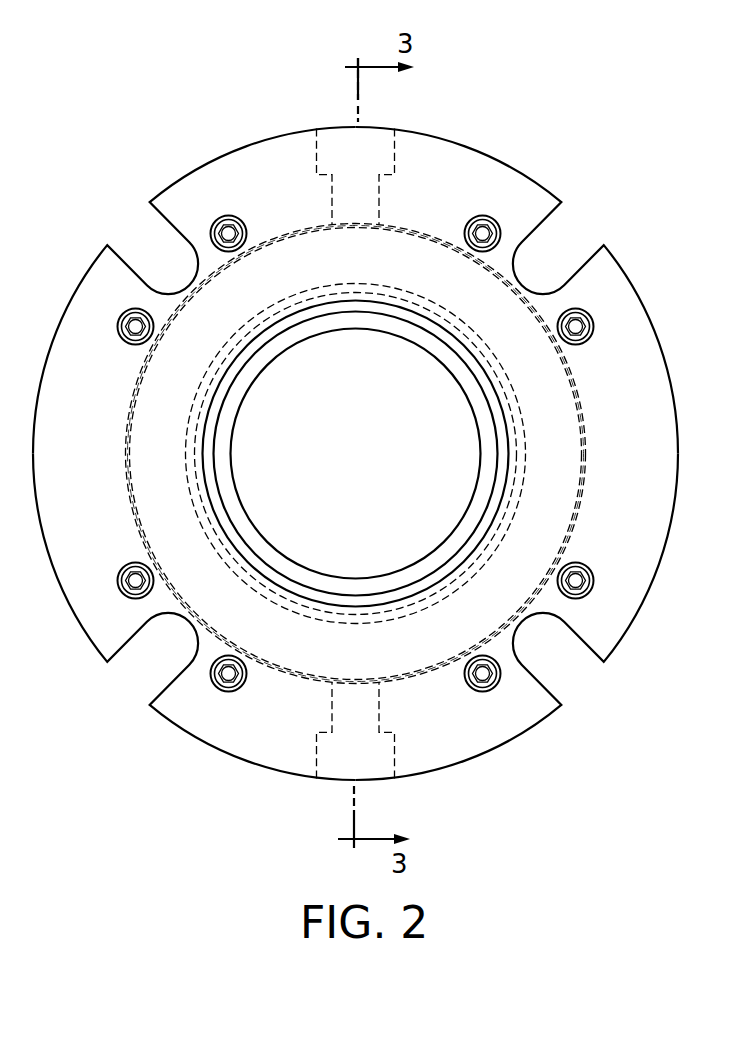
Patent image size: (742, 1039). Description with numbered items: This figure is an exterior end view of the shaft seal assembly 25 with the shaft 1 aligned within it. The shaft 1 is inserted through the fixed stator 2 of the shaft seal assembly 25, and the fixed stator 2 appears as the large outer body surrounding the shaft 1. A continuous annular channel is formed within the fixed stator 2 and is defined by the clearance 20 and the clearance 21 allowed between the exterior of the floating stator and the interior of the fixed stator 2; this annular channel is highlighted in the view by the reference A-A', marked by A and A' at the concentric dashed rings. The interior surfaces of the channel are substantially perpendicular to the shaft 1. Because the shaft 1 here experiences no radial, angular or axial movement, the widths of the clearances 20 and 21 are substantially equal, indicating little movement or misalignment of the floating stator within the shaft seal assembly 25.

The shaft 1 is at (423, 493).
The fixed stator 2 is at (658, 343).
The clearance 20 is at (436, 235).
The clearance 21 is at (427, 670).
The shaft seal assembly 25 is at (371, 453).
The annular channel highlight reference A is at (444, 454).
The annular channel highlight reference A' is at (422, 454).